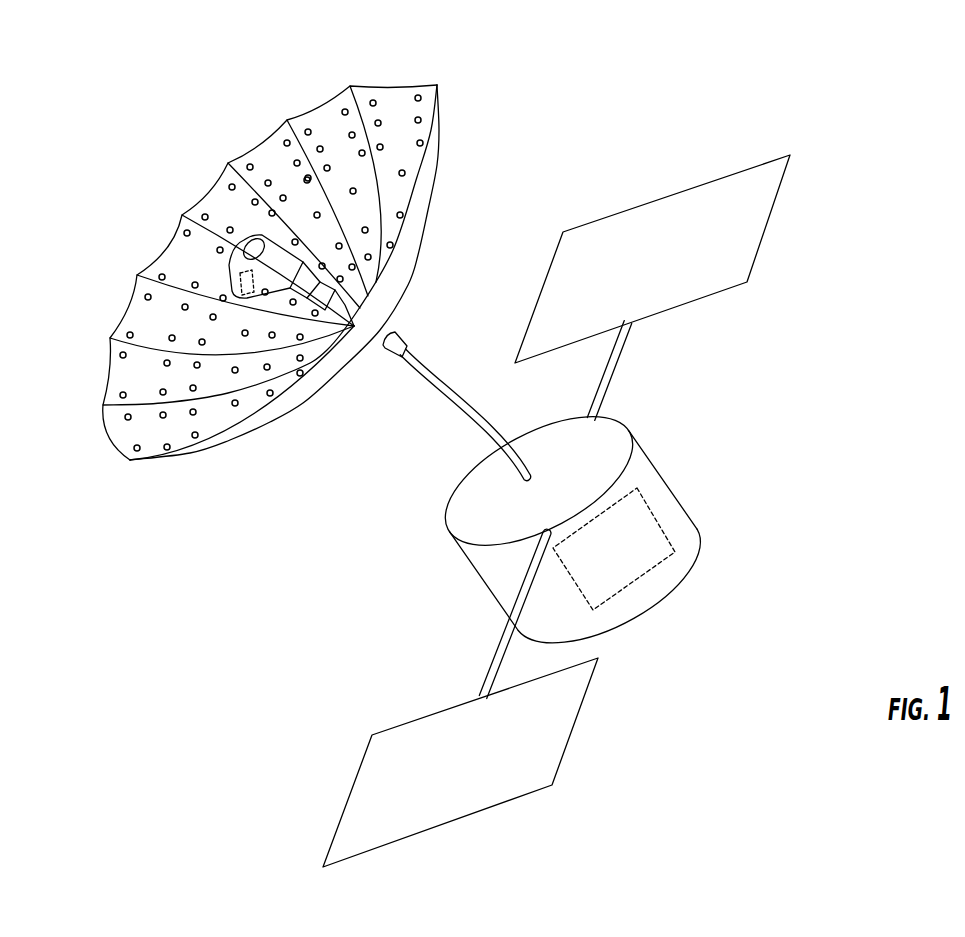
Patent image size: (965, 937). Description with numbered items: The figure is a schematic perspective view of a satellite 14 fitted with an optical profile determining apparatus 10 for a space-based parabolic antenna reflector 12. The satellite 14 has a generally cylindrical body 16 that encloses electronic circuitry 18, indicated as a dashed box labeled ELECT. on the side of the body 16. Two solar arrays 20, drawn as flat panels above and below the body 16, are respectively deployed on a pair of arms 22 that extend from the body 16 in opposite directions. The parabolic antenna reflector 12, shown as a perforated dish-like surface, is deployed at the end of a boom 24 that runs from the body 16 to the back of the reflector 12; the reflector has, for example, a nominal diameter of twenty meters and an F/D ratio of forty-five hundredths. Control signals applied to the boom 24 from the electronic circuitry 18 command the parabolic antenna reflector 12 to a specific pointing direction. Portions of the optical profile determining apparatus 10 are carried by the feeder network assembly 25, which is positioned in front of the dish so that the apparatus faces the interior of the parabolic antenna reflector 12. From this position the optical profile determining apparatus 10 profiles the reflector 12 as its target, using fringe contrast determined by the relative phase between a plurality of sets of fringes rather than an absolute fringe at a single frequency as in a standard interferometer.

The optical profile determining apparatus 10 is at (160, 266).
The parabolic antenna reflector 12 is at (398, 88).
The satellite 14 is at (852, 308).
The body 16 is at (685, 572).
The electronic circuitry 18 is at (663, 523).
The solar arrays 20 is at (757, 162).
The arms 22 is at (613, 380).
The boom 24 is at (458, 400).
The feeder network assembly 25 is at (301, 290).